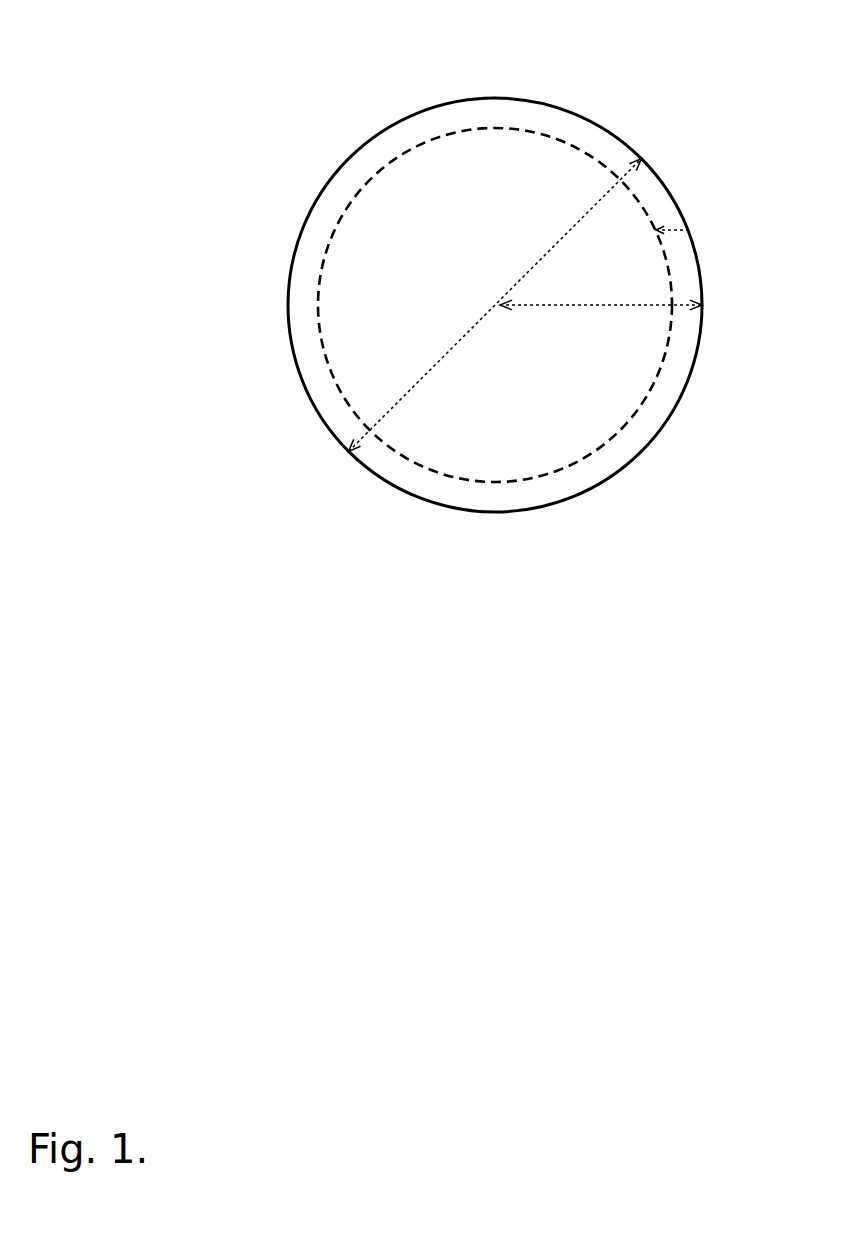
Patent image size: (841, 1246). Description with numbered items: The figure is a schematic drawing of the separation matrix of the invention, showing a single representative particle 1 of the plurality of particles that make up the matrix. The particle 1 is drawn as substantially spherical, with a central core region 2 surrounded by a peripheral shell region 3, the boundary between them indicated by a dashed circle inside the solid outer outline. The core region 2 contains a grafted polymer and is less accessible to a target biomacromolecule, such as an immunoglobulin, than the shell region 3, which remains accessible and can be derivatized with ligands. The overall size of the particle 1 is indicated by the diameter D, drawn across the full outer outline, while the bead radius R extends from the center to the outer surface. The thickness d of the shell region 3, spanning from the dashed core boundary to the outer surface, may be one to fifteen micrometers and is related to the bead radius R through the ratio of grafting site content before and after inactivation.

The particle 1 is at (207, 330).
The central core region 2 is at (457, 187).
The peripheral shell region 3 is at (340, 187).
The diameter of the particle D is at (580, 218).
The shell thickness d is at (670, 226).
The bead radius R is at (600, 305).